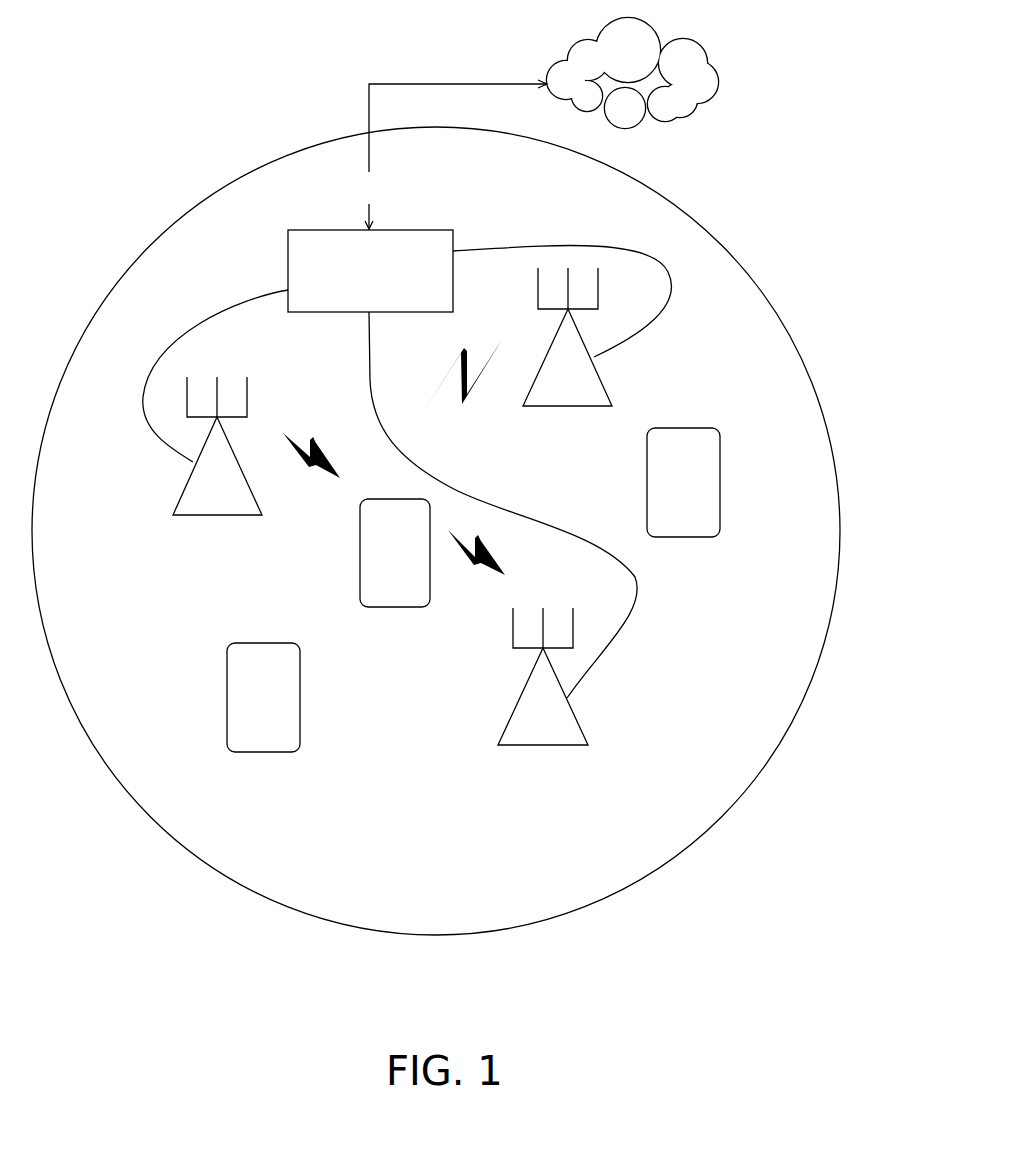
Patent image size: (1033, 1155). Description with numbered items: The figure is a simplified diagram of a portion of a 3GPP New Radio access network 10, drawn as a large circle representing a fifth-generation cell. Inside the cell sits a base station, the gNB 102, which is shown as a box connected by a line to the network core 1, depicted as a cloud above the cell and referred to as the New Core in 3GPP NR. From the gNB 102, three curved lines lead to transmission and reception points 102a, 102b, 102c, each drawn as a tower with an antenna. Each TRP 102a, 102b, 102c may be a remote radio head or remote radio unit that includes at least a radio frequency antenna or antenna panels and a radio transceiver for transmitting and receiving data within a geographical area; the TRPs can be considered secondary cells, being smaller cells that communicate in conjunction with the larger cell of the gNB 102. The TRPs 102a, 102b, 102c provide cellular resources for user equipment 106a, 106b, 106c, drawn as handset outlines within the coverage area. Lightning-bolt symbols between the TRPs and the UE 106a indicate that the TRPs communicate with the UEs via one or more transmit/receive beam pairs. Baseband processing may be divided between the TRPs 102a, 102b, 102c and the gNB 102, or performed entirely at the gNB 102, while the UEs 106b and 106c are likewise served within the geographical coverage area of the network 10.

The network core 1 is at (582, 90).
The access network 10 is at (802, 237).
The gNB 102 is at (347, 282).
The transmission and reception point 102a is at (187, 507).
The transmission and reception point 102b is at (538, 397).
The transmission and reception point 102c is at (513, 736).
The user equipment 106a is at (365, 602).
The user equipment 106b is at (233, 747).
The user equipment 106c is at (654, 531).